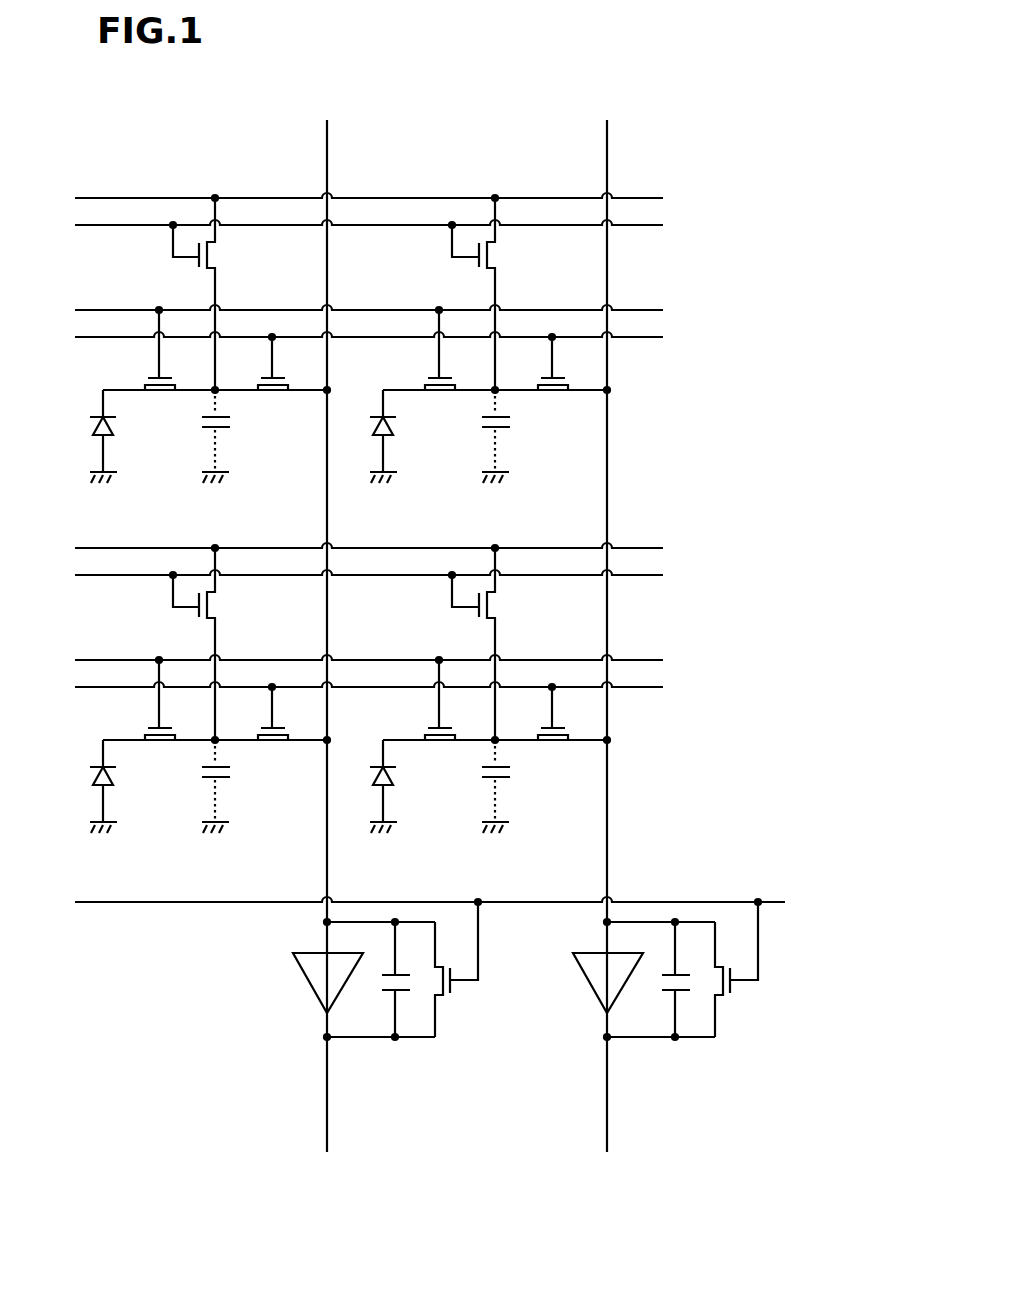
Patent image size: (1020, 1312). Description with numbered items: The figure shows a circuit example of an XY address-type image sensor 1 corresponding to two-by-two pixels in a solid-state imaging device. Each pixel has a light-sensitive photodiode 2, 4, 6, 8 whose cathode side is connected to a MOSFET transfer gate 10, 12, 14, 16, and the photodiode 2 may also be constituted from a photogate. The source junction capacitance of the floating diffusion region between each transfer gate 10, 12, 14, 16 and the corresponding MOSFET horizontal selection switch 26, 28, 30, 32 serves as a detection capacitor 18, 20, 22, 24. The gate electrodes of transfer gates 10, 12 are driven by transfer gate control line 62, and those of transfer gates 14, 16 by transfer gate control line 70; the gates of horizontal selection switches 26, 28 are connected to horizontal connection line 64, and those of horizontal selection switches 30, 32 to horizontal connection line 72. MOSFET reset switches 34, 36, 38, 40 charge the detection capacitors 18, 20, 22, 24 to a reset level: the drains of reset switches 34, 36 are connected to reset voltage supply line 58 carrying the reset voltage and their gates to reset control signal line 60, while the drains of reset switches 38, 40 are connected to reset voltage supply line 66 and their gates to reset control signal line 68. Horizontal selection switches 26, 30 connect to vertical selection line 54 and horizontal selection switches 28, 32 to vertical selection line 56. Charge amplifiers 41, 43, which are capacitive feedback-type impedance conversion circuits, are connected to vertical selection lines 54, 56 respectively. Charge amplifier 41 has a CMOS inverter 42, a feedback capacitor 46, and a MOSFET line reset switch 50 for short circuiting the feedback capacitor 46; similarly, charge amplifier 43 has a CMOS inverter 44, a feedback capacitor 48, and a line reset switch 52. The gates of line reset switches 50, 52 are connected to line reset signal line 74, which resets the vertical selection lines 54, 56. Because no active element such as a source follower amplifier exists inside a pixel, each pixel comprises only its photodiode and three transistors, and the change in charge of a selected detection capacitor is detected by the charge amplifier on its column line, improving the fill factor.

The XY address-type image sensor 1 is at (163, 1021).
The photodiode 2 is at (103, 418).
The photodiode 4 is at (383, 418).
The photodiode 6 is at (103, 768).
The photodiode 8 is at (383, 768).
The transfer gate 10 is at (157, 394).
The transfer gate 12 is at (437, 394).
The transfer gate 14 is at (159, 744).
The transfer gate 16 is at (439, 744).
The detection capacitor 18 is at (220, 433).
The detection capacitor 20 is at (500, 433).
The detection capacitor 22 is at (220, 783).
The detection capacitor 24 is at (500, 783).
The horizontal selection switch 26 is at (268, 393).
The horizontal selection switch 28 is at (548, 393).
The horizontal selection switch 30 is at (270, 743).
The horizontal selection switch 32 is at (550, 743).
The reset switch 34 is at (218, 252).
The reset switch 36 is at (498, 252).
The reset switch 38 is at (218, 602).
The reset switch 40 is at (498, 600).
The charge amplifier 41 is at (367, 1011).
The CMOS inverter 42 is at (303, 970).
The charge amplifier 43 is at (654, 1016).
The CMOS inverter 44 is at (580, 960).
The feedback capacitor 46 is at (392, 1000).
The feedback capacitor 48 is at (668, 1000).
The line reset switch 50 is at (452, 1005).
The line reset switch 52 is at (732, 1005).
The vertical selection line 54 is at (327, 160).
The vertical selection line 56 is at (607, 160).
The reset voltage supply line 58 is at (632, 192).
The reset control signal line 60 is at (632, 228).
The transfer gate control line 62 is at (645, 310).
The horizontal connection line 64 is at (637, 340).
The reset voltage supply line 66 is at (632, 545).
The reset control signal line 68 is at (632, 578).
The transfer gate control line 70 is at (645, 660).
The horizontal connection line 72 is at (637, 690).
The line reset signal line 74 is at (718, 902).